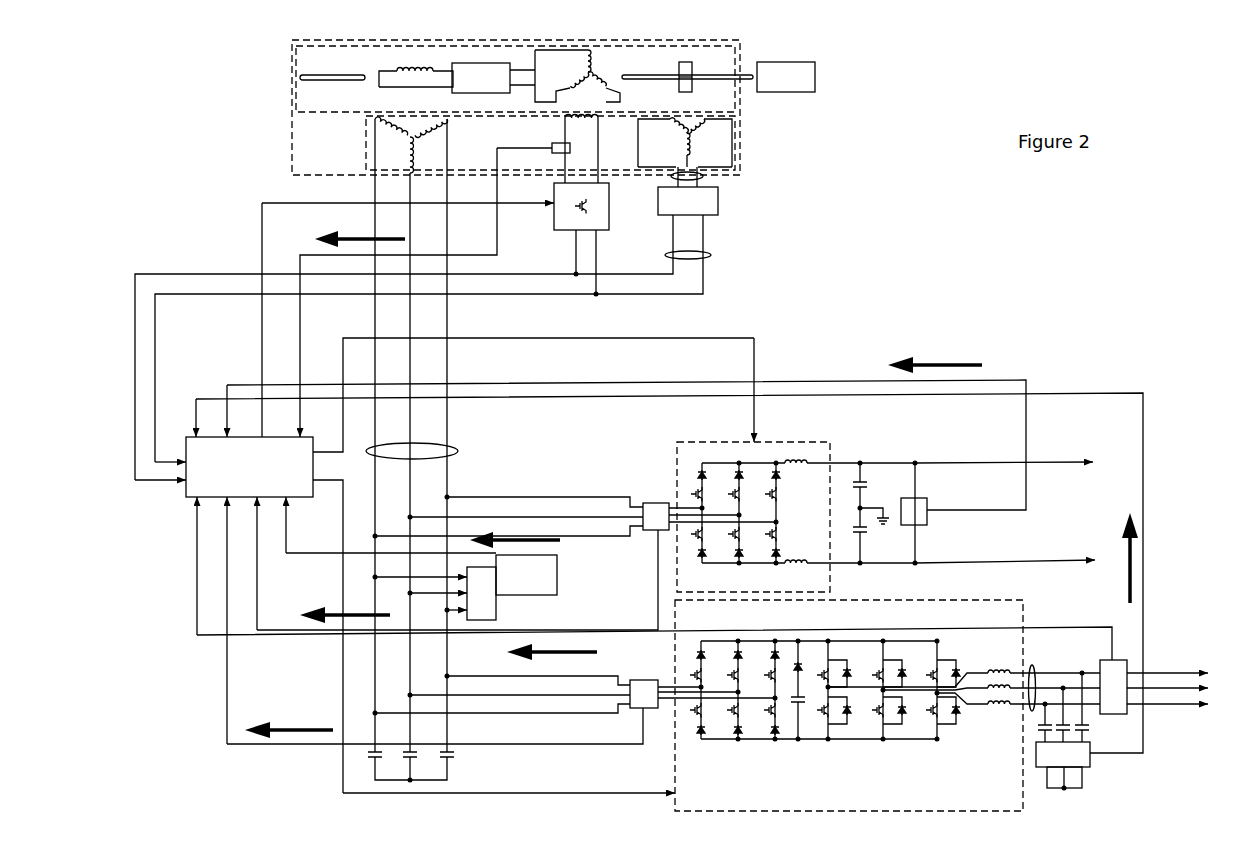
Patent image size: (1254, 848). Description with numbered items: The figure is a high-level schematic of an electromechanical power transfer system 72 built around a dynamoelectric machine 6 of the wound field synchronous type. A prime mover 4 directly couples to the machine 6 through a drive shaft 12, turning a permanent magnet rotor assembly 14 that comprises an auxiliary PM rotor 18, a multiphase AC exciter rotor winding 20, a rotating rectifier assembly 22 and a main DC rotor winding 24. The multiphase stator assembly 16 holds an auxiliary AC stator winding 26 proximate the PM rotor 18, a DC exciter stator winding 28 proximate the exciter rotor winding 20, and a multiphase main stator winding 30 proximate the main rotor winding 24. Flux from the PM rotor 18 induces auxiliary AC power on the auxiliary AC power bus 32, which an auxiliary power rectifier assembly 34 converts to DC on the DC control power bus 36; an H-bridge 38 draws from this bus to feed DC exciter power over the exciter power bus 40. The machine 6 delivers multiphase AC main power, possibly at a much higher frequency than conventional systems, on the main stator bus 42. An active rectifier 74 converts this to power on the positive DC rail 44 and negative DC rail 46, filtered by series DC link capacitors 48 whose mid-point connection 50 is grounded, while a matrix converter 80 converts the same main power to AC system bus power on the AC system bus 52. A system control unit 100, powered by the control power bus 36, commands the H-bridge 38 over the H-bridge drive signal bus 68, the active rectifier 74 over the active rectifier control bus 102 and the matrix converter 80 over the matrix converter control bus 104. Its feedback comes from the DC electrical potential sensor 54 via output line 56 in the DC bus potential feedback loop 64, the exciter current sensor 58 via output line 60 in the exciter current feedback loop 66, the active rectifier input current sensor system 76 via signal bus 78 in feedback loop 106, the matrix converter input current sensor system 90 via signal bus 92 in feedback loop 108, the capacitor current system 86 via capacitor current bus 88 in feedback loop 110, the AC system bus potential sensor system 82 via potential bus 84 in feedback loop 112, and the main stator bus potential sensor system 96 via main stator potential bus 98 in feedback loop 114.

The prime mover 4 is at (786, 77).
The dynamoelectric machine 6 is at (292, 146).
The drive shaft 12 is at (748, 74).
The permanent magnet rotor assembly 14 is at (736, 94).
The multiphase stator assembly 16 is at (736, 144).
The auxiliary permanent magnet rotor 18 is at (690, 89).
The multiphase AC exciter rotor winding 20 is at (572, 91).
The rotating rectifier assembly 22 is at (481, 78).
The main DC rotor winding 24 is at (405, 68).
The auxiliary multiphase AC stator winding 26 is at (694, 128).
The DC exciter stator winding 28 is at (598, 125).
The multiphase main stator winding 30 is at (440, 128).
The auxiliary AC power bus 32 is at (712, 178).
The auxiliary power rectifier assembly 34 is at (688, 201).
The DC control power bus 36 is at (706, 258).
The H-bridge 38 is at (609, 209).
The exciter power bus 40 is at (598, 152).
The main stator bus 42 is at (458, 450).
The positive DC rail 44 is at (956, 462).
The negative DC rail 46 is at (956, 560).
The DC link capacitors 48 is at (862, 480).
The mid-point connection 50 is at (864, 505).
The AC system bus 52 is at (1036, 666).
The DC electrical potential sensor 54 is at (927, 504).
The DC bus potential sensor output line 56 is at (960, 510).
The exciter current sensor 58 is at (555, 143).
The exciter current sensor output line 60 is at (497, 240).
The DC bus potential feedback loop 64 is at (950, 363).
The exciter current feedback loop 66 is at (354, 235).
The H-bridge drive signal bus 68 is at (262, 312).
The electromechanical power transfer system 72 is at (226, 103).
The active rectifier 74 is at (785, 441).
The multiphase AC active rectifier input current sensor system 76 is at (652, 503).
The active rectifier input current signal bus 78 is at (656, 542).
The matrix converter 80 is at (1025, 618).
The multiphase AC system bus electrical potential sensor system 82 is at (1125, 660).
The AC system bus potential bus 84 is at (1068, 626).
The multiphase AC capacitor current system 86 is at (1090, 762).
The capacitor current bus 88 is at (1108, 393).
The multiphase AC matrix converter input current sensor system 90 is at (644, 680).
The matrix converter input current signal bus 92 is at (642, 722).
The multiphase AC main stator bus electrical potential sensor system 96 is at (498, 600).
The main stator potential bus 98 is at (558, 568).
The system control unit 100 is at (249, 467).
The active rectifier control bus 102 is at (712, 338).
The matrix converter control bus 104 is at (508, 792).
The active rectifier input current feedback loop 106 is at (345, 612).
The matrix converter input current feedback loop 108 is at (292, 728).
The capacitor current feedback loop 110 is at (1133, 578).
The AC system bus potential feedback loop 112 is at (566, 650).
The main stator potential feedback loop 114 is at (525, 538).